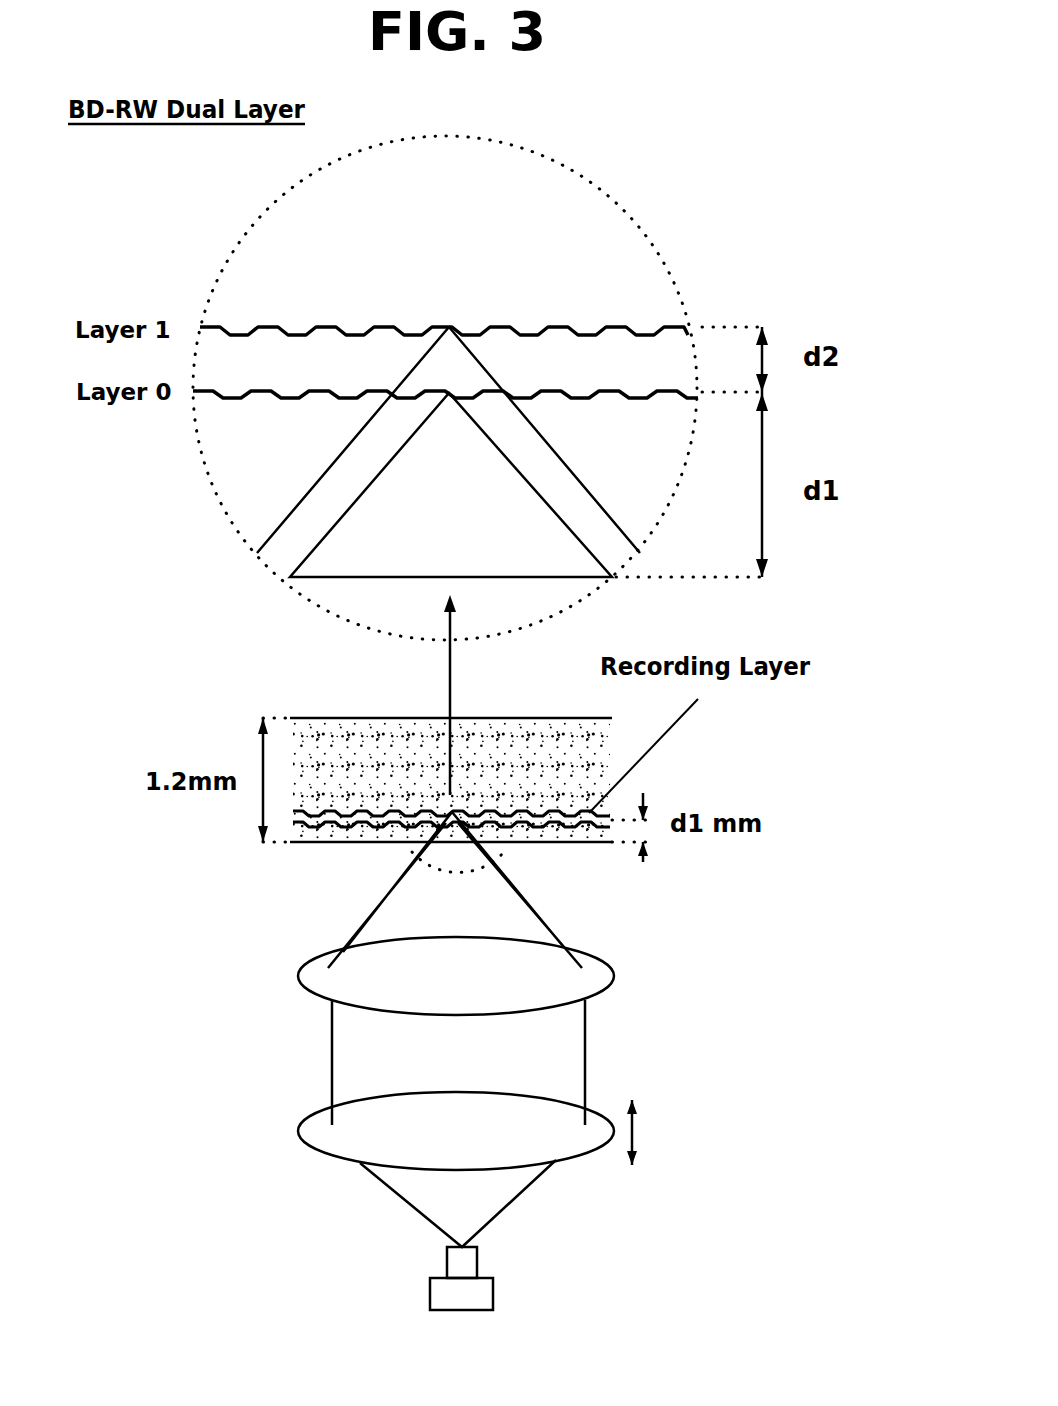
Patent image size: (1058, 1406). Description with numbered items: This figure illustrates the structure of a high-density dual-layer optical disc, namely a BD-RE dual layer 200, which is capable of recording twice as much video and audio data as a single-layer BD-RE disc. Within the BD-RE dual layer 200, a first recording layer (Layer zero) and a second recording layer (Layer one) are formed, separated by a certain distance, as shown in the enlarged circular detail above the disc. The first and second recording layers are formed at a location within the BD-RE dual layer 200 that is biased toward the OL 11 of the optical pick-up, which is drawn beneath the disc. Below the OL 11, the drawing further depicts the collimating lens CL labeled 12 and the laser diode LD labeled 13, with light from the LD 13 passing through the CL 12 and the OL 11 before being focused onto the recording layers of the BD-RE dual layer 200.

The BD-RE dual layer 200 is at (342, 750).
The OL 11 is at (313, 967).
The collimator lens (CL) 12 is at (313, 1125).
The laser diode (LD) 13 is at (483, 1287).